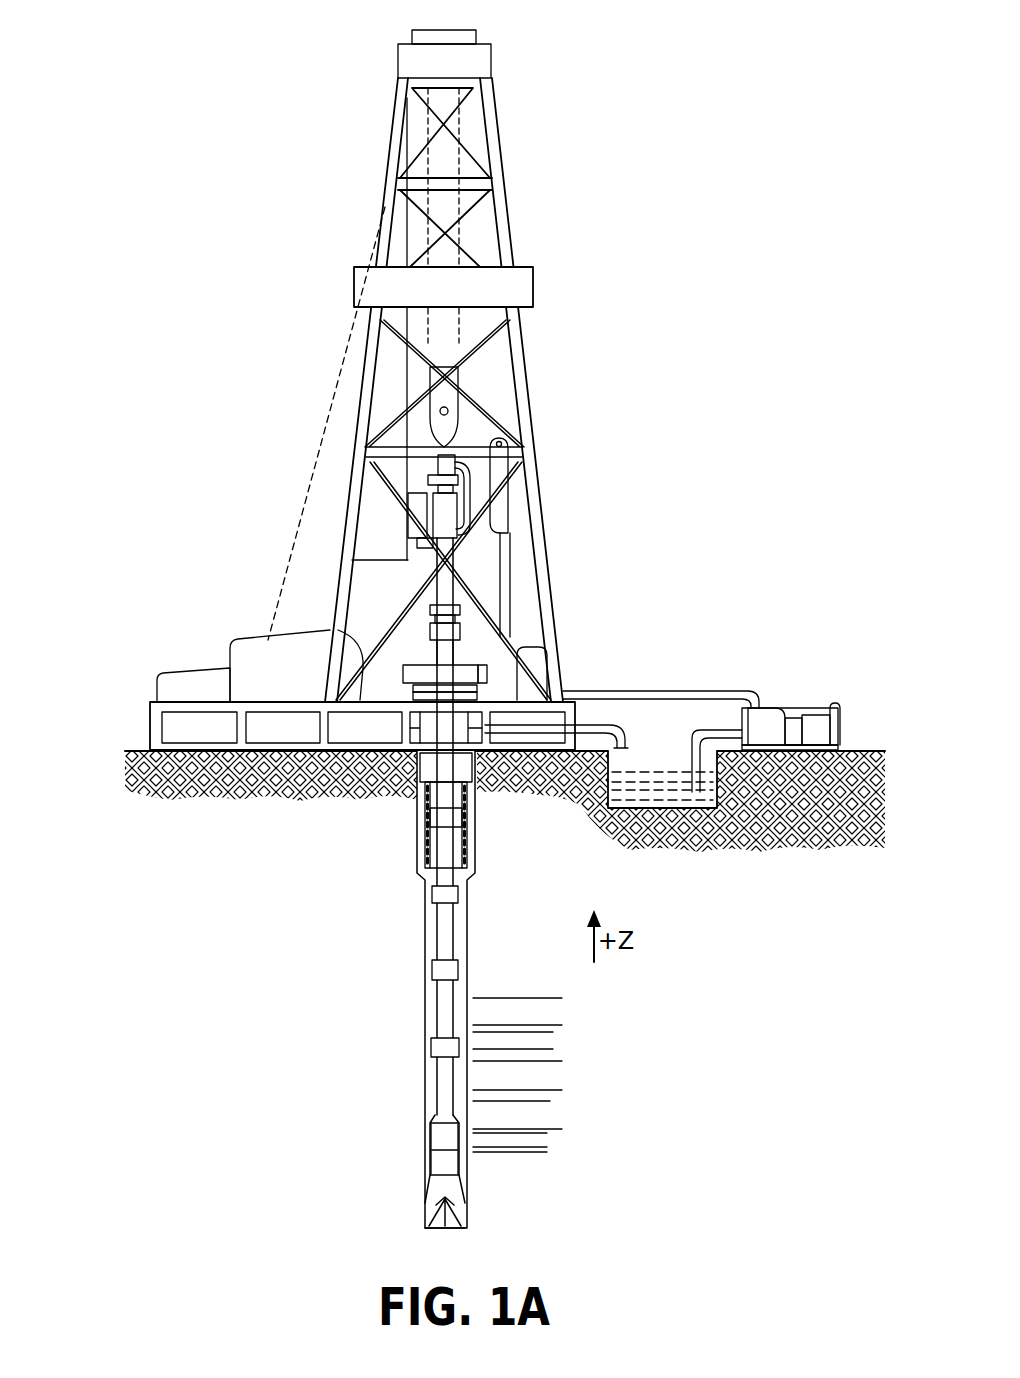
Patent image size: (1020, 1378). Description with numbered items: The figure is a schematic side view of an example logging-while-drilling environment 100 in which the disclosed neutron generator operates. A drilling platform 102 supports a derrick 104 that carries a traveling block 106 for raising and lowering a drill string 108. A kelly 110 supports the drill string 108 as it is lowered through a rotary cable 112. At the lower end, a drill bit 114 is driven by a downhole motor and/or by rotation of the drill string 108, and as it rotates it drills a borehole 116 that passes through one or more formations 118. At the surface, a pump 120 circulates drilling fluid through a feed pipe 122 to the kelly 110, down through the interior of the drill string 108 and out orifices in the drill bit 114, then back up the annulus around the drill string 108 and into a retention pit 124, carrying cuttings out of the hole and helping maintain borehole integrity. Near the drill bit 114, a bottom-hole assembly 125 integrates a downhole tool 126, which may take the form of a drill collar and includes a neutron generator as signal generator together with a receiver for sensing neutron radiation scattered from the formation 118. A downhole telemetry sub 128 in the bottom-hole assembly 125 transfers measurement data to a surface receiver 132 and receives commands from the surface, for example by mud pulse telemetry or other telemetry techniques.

The LWD environment 100 is at (331, 89).
The drilling platform 102 is at (150, 727).
The derrick 104 is at (508, 218).
The traveling block 106 is at (460, 418).
The drill string 108 is at (453, 923).
The kelly 110 is at (490, 500).
The rotary cable 112 is at (470, 660).
The drill bit 114 is at (460, 1207).
The borehole 116 is at (465, 958).
The formations 118 is at (562, 992).
The pump 120 is at (775, 718).
The feed pipe 122 is at (667, 690).
The retention pit 124 is at (668, 798).
The bottom-hole assembly 125 is at (367, 1168).
The downhole tool 126 is at (440, 1153).
The downhole telemetry sub 128 is at (440, 1137).
The surface receiver 132 is at (443, 573).